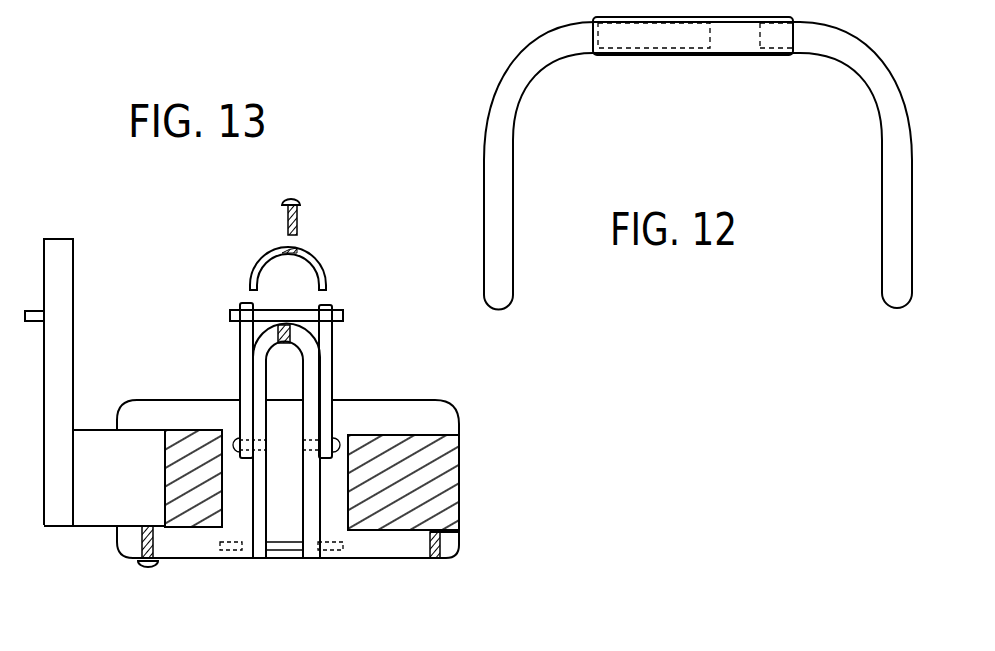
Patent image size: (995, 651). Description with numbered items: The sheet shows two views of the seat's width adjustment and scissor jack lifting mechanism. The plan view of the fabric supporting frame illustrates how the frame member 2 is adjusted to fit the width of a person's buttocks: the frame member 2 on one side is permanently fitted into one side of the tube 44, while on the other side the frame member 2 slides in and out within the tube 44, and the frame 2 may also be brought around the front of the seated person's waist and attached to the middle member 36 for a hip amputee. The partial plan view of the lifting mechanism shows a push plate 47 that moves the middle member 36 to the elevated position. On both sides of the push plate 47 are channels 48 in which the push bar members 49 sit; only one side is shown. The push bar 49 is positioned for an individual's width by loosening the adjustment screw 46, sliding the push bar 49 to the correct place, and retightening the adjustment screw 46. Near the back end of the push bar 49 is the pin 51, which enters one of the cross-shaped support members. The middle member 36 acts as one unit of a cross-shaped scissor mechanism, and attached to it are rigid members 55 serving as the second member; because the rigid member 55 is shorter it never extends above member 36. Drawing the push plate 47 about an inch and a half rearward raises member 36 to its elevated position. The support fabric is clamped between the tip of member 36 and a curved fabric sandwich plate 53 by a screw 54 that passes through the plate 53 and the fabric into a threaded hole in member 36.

In FIG. 12, the frame member 2 is at (504, 197).
In FIG. 12, the tube 44 is at (770, 43).
In FIG. 13, the middle member 36 is at (312, 553).
In FIG. 13, the adjustment screw 46 is at (158, 571).
In FIG. 13, the push plate 47 is at (387, 412).
In FIG. 13, the channels 48 is at (445, 485).
In FIG. 13, the push bar member 49 is at (58, 413).
In FIG. 13, the pin 51 is at (52, 317).
In FIG. 13, the curved fabric sandwich plate 53 is at (330, 282).
In FIG. 13, the screw 54 is at (307, 222).
In FIG. 13, the rigid member 55 is at (325, 360).